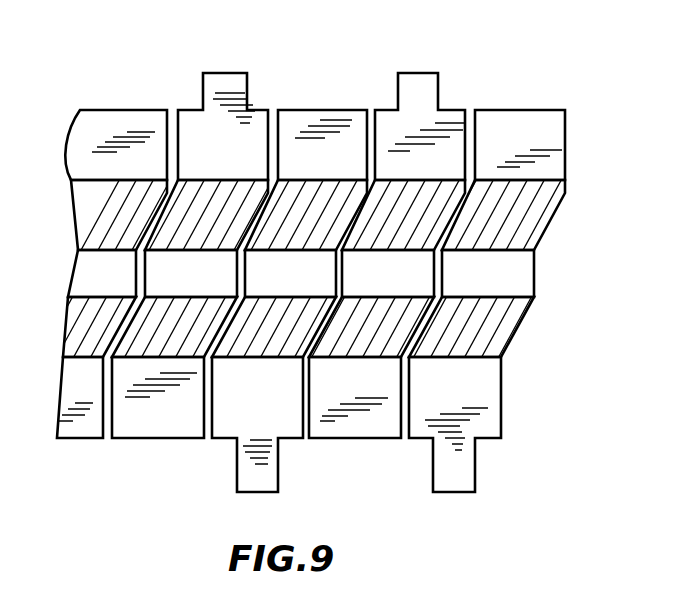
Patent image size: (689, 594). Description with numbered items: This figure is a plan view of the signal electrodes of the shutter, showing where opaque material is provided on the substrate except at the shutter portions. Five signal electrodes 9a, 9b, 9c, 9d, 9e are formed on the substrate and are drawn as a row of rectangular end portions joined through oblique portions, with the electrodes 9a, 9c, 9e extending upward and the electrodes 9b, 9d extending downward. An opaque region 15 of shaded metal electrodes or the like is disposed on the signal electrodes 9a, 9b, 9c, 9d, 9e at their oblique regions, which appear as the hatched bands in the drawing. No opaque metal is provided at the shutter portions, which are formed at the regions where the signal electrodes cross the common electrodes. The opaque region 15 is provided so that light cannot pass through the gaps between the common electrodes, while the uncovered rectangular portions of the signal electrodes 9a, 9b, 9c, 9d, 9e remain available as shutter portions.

The signal electrode 9a is at (538, 123).
The signal electrode 9b is at (358, 427).
The signal electrode 9c is at (333, 122).
The signal electrode 9d is at (158, 427).
The signal electrode 9e is at (133, 118).
The opaque region 15 is at (498, 326).